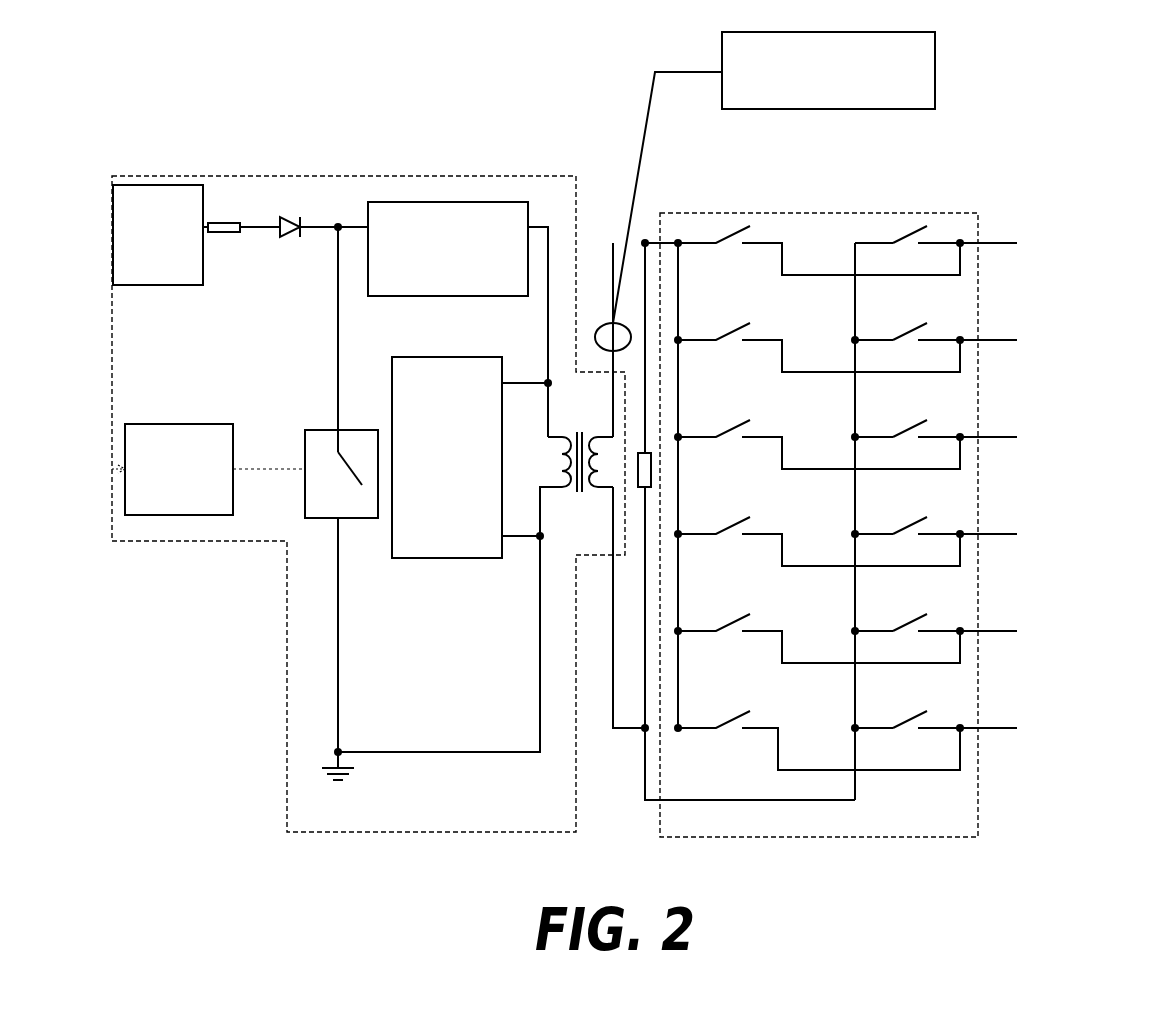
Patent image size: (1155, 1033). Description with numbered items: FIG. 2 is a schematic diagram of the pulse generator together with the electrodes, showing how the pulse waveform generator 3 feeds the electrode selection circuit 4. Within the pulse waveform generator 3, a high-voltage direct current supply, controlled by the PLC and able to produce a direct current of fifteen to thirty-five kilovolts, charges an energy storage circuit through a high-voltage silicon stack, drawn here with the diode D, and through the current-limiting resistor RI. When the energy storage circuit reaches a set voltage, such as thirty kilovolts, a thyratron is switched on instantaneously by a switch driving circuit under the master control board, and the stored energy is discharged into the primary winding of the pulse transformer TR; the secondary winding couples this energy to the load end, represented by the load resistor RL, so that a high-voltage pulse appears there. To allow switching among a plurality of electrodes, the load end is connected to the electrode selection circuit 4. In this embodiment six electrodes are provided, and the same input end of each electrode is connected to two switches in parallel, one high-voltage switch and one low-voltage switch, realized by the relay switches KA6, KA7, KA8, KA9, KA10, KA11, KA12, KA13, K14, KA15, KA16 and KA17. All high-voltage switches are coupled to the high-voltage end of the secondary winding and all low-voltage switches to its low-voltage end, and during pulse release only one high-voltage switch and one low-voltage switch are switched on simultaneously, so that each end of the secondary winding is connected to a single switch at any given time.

The pulse waveform generator 3 is at (523, 463).
The electrode selection circuit 4 is at (887, 558).
The current-limiting resistor RI is at (241, 212).
The diode 1N4001 D is at (321, 228).
The pulse transformer TR is at (576, 484).
The load resistor RL is at (637, 470).
The relay switch KA6 is at (714, 249).
The relay switch KA7 is at (910, 249).
The relay switch KA8 is at (714, 346).
The relay switch KA9 is at (910, 346).
The relay switch KA10 is at (714, 443).
The relay switch KA11 is at (911, 443).
The relay switch KA12 is at (714, 540).
The relay switch KA13 is at (911, 540).
The relay switch K14 is at (714, 637).
The relay switch KA15 is at (911, 637).
The relay switch KA16 is at (714, 734).
The relay switch KA17 is at (911, 734).